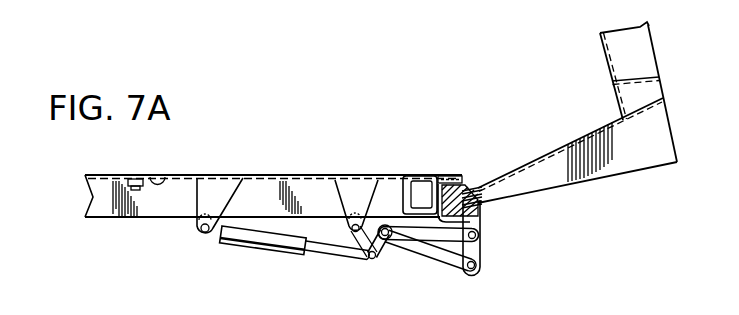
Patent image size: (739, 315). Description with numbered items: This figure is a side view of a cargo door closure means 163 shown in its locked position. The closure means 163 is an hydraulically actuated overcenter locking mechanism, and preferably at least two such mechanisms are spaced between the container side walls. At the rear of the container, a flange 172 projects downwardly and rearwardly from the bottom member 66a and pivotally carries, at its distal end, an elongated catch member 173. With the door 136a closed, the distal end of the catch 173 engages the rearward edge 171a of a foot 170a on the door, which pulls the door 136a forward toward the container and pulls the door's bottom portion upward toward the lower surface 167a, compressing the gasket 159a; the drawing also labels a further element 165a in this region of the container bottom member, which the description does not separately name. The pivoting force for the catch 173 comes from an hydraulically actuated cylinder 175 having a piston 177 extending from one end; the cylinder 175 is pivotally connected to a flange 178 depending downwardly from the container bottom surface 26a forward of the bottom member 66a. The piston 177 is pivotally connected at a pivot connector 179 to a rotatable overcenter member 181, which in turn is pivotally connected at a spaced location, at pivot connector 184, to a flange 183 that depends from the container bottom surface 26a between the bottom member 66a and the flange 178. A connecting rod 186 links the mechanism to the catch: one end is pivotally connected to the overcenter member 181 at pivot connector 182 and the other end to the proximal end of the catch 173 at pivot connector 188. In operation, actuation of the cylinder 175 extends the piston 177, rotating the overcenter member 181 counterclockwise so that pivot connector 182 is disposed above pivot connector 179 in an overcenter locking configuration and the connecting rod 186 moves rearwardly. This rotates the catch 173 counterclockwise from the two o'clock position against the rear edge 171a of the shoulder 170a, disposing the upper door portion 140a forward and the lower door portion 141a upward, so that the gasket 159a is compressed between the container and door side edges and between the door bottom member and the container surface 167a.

The container bottom surface 26a is at (153, 176).
The flange 178 is at (198, 211).
The hydraulically actuated cylinder 175 is at (247, 240).
The closure means 163 is at (257, 270).
The piston 177 is at (333, 252).
The pivot connector 179 is at (371, 262).
The rotatable overcenter member 181 is at (380, 247).
The pivot connector 182 is at (388, 240).
The flange 183 is at (333, 198).
The pivot connector 184 is at (343, 197).
The bottom member 66a is at (402, 177).
The lower surface 167a is at (449, 180).
The hinge block 165a is at (462, 183).
The foot 170a is at (486, 199).
The rearward edge 171a is at (486, 214).
The elongated catch member 173 is at (482, 228).
The flange 172 is at (482, 262).
The pivot connector 188 is at (478, 255).
The connecting rod 186 is at (458, 270).
The gasket 159a is at (473, 182).
The lower door portion 141a is at (583, 138).
The upper door portion 140a is at (620, 52).
The door 136a is at (640, 27).